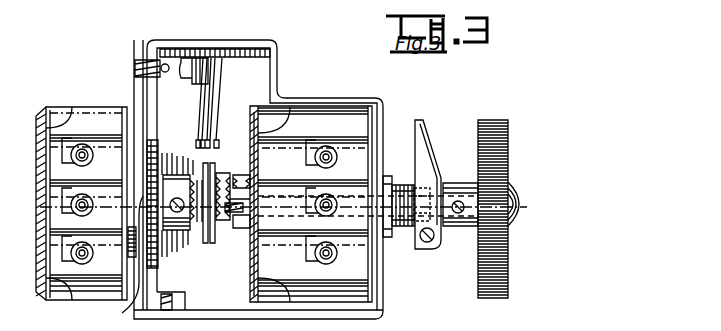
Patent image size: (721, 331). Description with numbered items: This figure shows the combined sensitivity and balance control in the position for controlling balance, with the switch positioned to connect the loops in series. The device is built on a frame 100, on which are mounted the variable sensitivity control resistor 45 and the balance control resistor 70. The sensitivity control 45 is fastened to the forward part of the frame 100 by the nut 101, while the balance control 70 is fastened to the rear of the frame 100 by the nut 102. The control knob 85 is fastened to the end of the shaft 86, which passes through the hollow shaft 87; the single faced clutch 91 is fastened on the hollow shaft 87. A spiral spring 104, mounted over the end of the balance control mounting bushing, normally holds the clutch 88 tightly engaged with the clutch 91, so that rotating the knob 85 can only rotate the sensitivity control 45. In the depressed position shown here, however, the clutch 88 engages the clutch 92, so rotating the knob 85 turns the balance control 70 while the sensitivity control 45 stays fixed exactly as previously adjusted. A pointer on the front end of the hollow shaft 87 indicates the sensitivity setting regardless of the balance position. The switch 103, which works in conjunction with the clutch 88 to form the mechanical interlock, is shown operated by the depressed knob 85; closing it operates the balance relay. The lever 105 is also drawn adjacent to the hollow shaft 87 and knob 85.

The variable sensitivity control resistor 45 is at (298, 108).
The balance control resistor 70 is at (96, 108).
The control knob 85 is at (495, 120).
The shaft 86 is at (237, 212).
The hollow shaft 87 is at (441, 183).
The clutch 88 is at (214, 162).
The single faced clutch 91 is at (247, 176).
The clutch 92 is at (183, 153).
The frame 100 is at (216, 40).
The nut 101 is at (386, 240).
The nut 102 is at (118, 260).
The switch 103 is at (214, 103).
The spiral spring 104 is at (182, 243).
The lever 105 is at (433, 135).